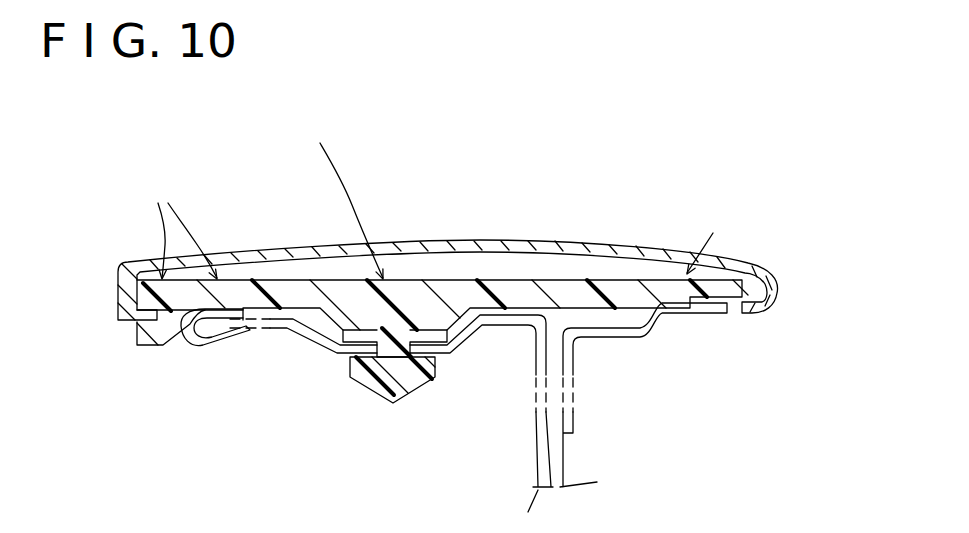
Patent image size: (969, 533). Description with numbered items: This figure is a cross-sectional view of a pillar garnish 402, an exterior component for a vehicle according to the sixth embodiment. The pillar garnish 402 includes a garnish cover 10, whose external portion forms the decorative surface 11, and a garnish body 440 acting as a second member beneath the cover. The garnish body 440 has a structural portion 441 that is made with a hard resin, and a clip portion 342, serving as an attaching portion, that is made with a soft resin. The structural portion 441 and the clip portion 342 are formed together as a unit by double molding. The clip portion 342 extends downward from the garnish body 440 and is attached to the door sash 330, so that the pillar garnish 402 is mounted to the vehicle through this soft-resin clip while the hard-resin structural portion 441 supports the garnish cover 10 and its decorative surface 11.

The pillar garnish 402 is at (666, 150).
The garnish cover 10 is at (551, 248).
The decorative surface 11 is at (427, 243).
The garnish body 440 is at (593, 314).
The structural portion 441 is at (300, 290).
The clip portion 342 is at (386, 392).
The door sash 330 is at (503, 326).